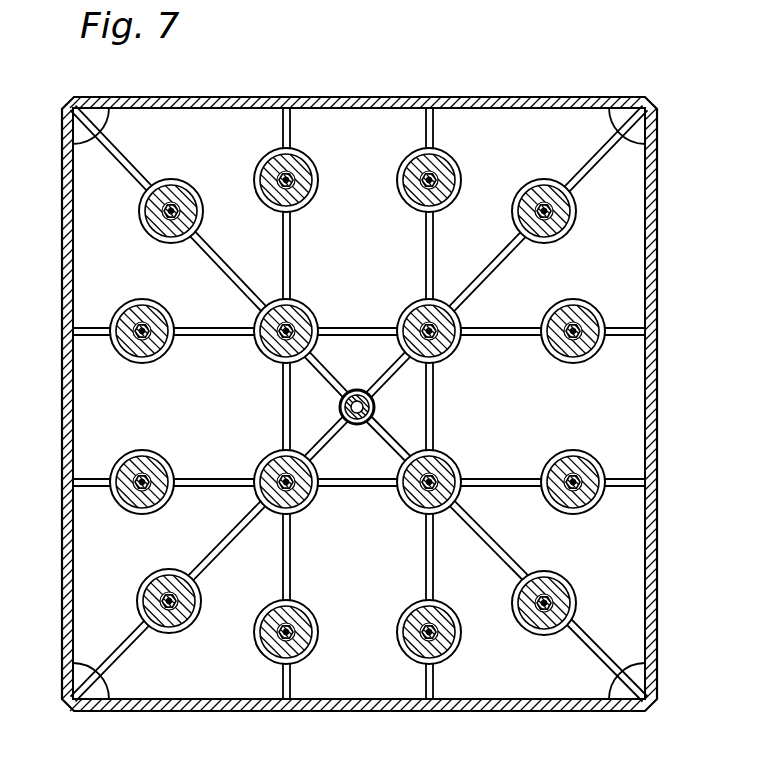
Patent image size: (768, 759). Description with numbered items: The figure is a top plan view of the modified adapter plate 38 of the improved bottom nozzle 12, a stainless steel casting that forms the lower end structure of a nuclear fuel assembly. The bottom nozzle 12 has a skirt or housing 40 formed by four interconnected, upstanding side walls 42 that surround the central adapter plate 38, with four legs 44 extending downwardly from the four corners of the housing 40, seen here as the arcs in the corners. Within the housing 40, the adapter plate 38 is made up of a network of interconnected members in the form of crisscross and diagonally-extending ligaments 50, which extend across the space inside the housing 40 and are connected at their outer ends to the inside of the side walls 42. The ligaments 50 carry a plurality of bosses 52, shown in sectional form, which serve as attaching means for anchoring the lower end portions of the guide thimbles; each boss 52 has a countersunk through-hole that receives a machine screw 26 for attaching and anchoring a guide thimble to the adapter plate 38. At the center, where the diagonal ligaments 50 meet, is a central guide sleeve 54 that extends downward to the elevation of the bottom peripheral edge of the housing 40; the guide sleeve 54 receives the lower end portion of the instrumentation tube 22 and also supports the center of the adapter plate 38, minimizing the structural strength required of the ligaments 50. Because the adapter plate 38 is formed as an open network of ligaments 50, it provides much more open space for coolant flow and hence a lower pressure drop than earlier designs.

The bottom nozzle 12 is at (668, 152).
The instrumentation tube 22 is at (360, 390).
The machine screws 26 is at (270, 178).
The adapter plate 38 is at (504, 124).
The housing 40 is at (666, 452).
The side walls 42 is at (340, 98).
The legs 44 is at (84, 150).
The ligaments 50 is at (283, 272).
The bosses 52 is at (282, 200).
The guide sleeve 54 is at (372, 400).